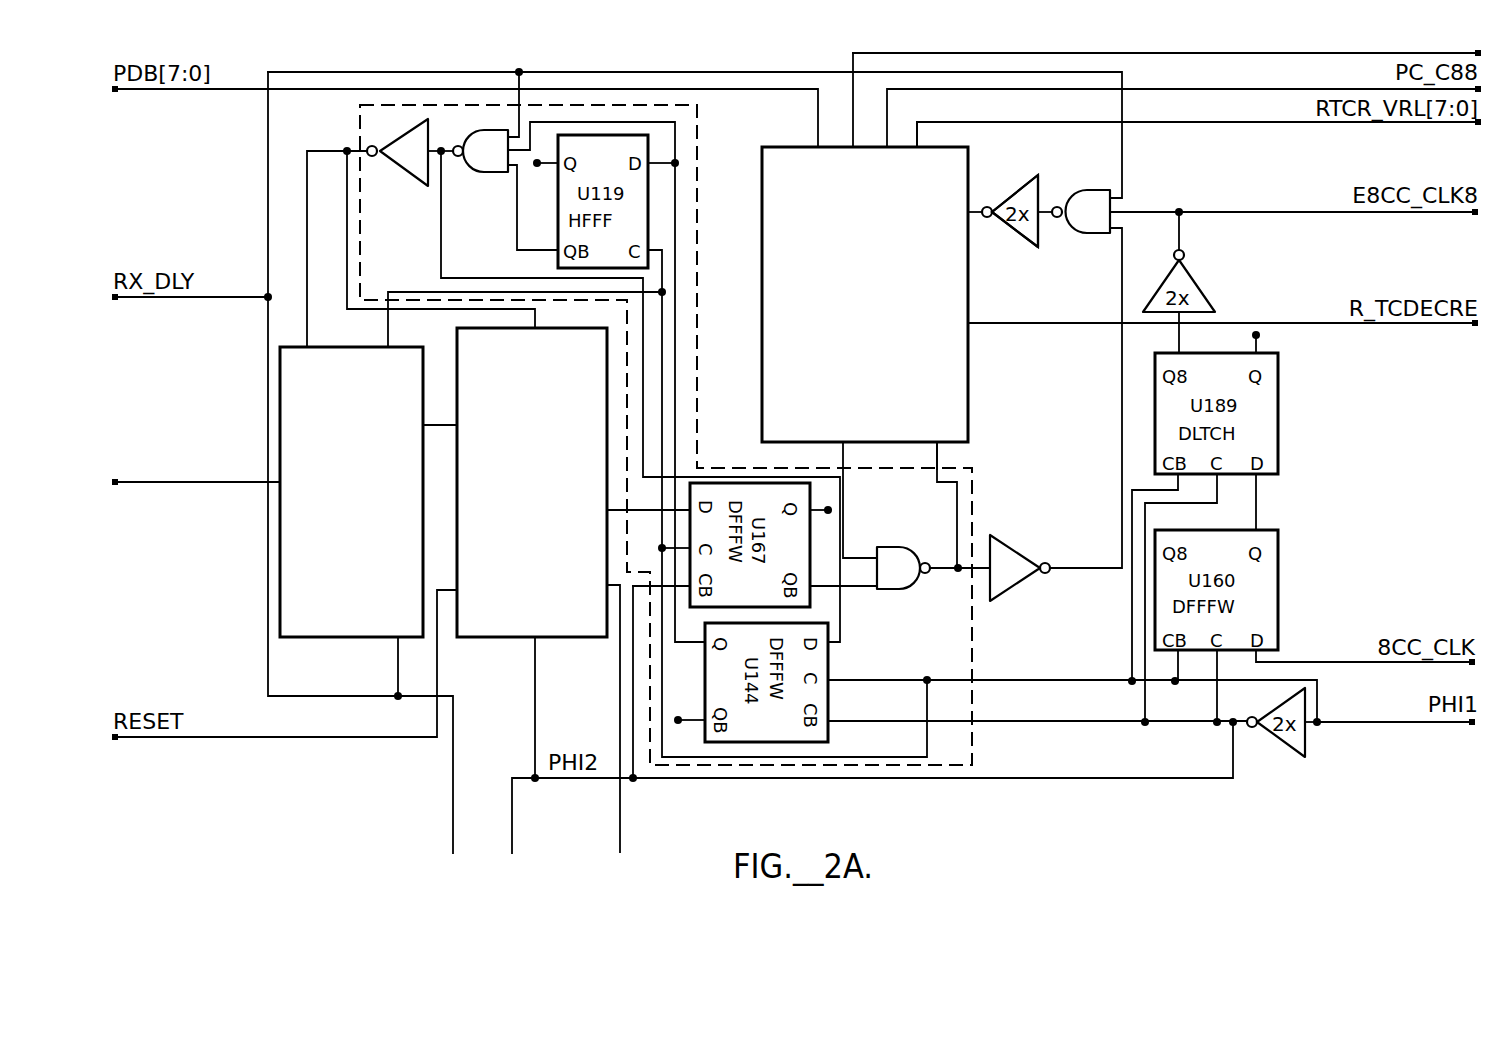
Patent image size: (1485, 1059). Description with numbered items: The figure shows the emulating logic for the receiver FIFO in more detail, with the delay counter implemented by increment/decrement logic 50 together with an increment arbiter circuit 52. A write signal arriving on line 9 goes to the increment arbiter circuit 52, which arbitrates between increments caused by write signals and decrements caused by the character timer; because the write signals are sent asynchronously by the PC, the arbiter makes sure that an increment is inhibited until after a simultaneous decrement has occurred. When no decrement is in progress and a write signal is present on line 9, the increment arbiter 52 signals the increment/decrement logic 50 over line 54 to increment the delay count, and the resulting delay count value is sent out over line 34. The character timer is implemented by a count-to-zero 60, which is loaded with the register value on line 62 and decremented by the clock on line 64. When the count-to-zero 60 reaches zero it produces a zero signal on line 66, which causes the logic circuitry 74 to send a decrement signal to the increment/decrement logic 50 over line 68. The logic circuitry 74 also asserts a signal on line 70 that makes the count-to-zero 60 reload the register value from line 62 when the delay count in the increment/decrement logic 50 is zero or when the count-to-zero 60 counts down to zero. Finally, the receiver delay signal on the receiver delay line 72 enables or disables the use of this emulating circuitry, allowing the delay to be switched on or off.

The write signal line 9 is at (237, 480).
The delay count output line 34 is at (620, 695).
The increment/decrement logic 50 is at (500, 640).
The increment arbiter circuit 52 is at (386, 640).
The increment signal line 54 is at (440, 423).
The count-to-zero 60 is at (975, 418).
The register value line 62 is at (1243, 125).
The clock line 64 is at (975, 212).
The zero signal line 66 is at (843, 453).
The decrement signal line 68 is at (347, 297).
The load signal line 70 is at (945, 460).
The receiver delay line 72 is at (245, 297).
The logic circuitry 74 is at (977, 497).